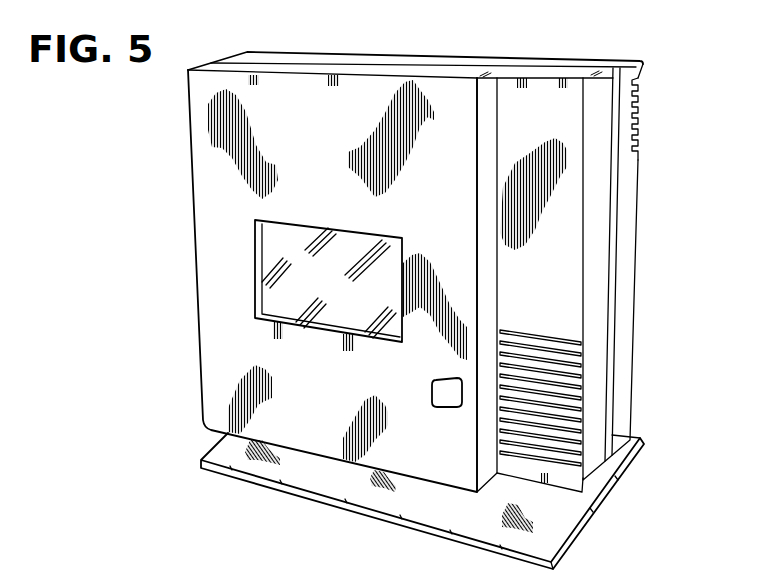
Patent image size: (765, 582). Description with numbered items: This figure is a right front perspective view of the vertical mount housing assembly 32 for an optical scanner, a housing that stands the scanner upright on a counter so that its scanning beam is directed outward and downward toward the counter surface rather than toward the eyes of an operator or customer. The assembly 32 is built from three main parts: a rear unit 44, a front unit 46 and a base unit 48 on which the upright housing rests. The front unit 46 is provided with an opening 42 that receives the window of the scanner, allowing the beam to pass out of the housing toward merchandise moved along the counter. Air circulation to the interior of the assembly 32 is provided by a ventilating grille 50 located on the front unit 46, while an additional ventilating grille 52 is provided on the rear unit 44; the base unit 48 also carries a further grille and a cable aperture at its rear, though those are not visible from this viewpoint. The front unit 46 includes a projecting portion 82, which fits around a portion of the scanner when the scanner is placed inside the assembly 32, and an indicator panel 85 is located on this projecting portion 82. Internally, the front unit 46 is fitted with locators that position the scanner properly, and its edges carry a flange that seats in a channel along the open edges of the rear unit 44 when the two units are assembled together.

The vertical mount housing assembly 32 is at (498, 38).
The opening 42 is at (254, 262).
The rear unit 44 is at (636, 202).
The front unit 46 is at (199, 350).
The base unit 48 is at (580, 520).
The ventilating grille 50 is at (552, 342).
The additional ventilating grille 52 is at (640, 101).
The projecting portion 82 is at (196, 185).
The indicator panel 85 is at (437, 383).